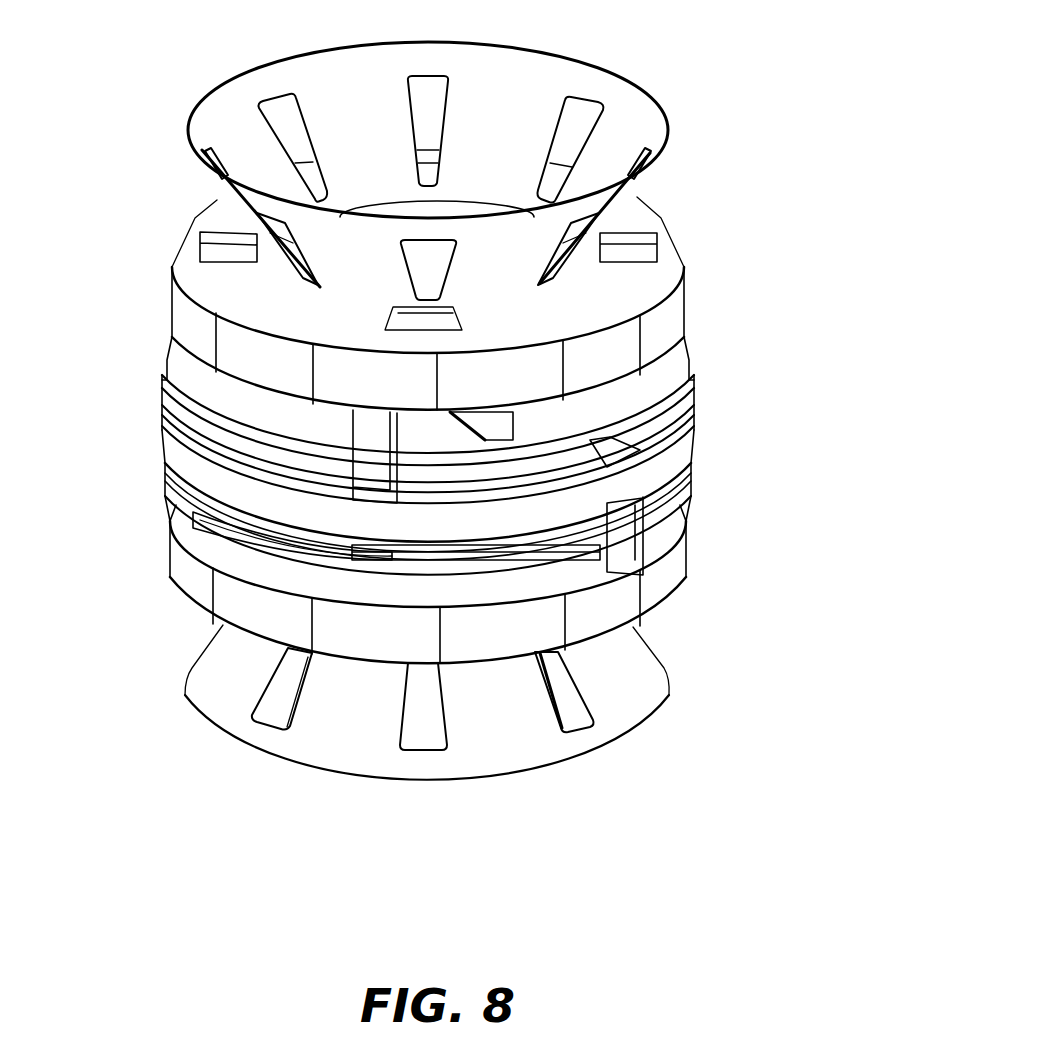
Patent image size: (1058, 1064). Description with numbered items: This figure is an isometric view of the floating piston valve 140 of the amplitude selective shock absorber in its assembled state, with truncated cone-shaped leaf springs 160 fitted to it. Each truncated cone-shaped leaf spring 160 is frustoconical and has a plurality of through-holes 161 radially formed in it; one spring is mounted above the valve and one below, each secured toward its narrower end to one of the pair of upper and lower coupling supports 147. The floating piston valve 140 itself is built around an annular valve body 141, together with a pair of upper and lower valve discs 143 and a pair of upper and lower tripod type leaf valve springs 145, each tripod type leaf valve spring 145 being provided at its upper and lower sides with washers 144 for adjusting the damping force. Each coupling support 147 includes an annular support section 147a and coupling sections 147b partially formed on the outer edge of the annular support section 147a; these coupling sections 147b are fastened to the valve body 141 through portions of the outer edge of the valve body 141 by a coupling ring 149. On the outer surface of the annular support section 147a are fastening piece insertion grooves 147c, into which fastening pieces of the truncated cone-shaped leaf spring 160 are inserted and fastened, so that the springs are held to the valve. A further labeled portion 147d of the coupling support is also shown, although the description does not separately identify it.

The floating piston valve 140 is at (499, 437).
The annular valve body 141 is at (162, 390).
The valve disc 143 is at (660, 386).
The washer 144 is at (507, 563).
The tripod type leaf valve spring 145 is at (627, 427).
The coupling support 147 is at (186, 235).
The annular support section 147a is at (190, 310).
The coupling section 147b is at (373, 470).
The fastening piece insertion groove 147c is at (598, 245).
The lower plate 147d is at (178, 567).
The coupling ring 149 is at (158, 438).
The truncated cone-shaped leaf spring 160 is at (643, 112).
The through-hole 161 is at (588, 105).